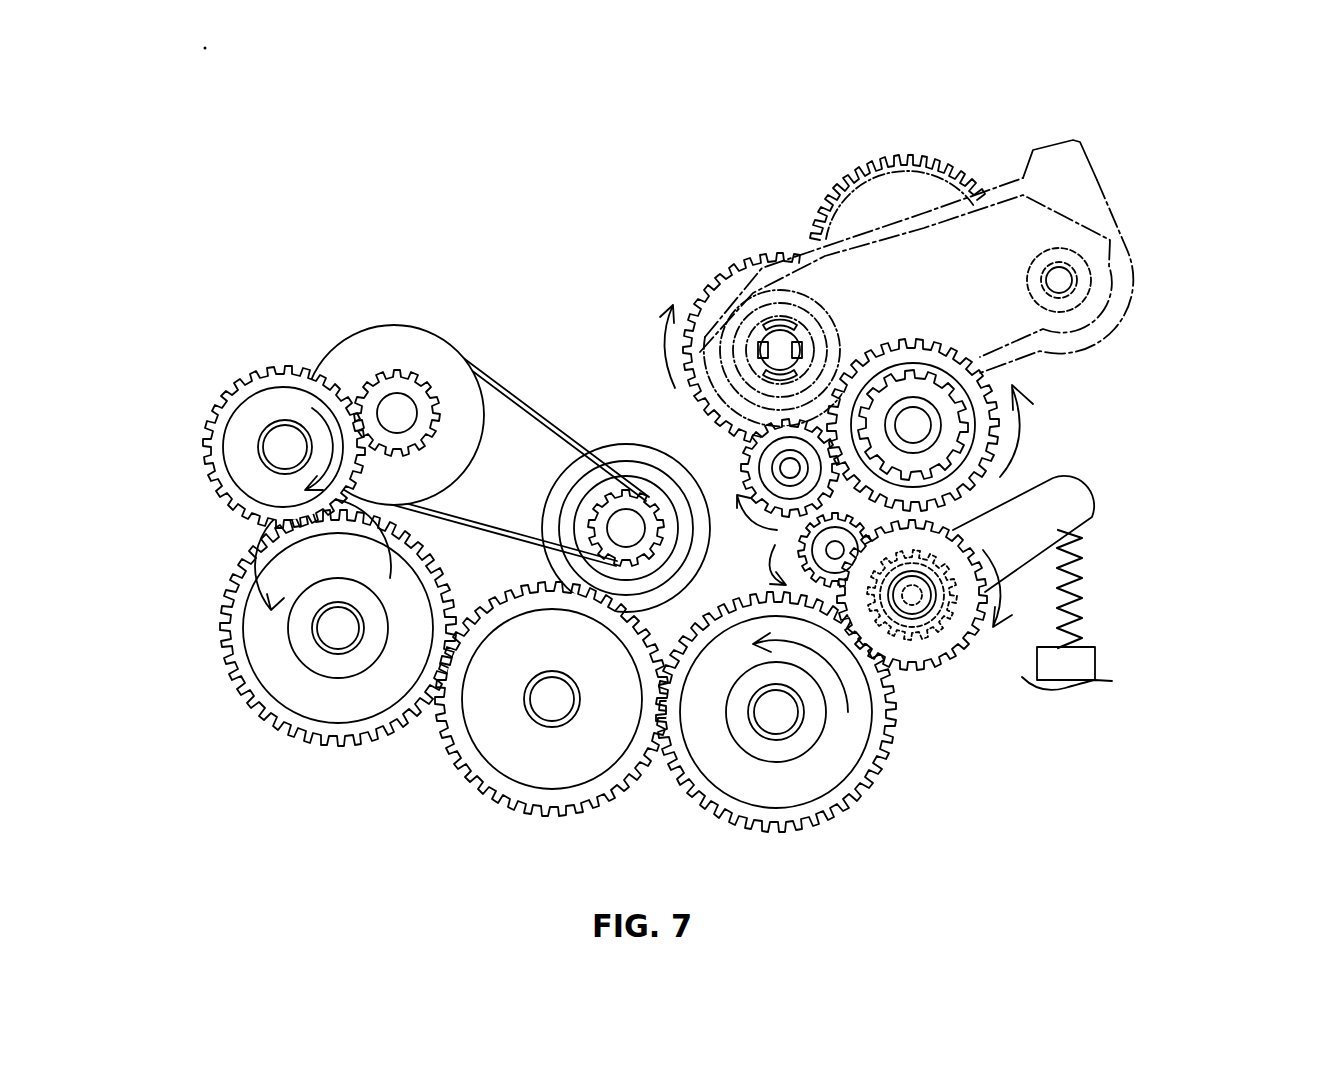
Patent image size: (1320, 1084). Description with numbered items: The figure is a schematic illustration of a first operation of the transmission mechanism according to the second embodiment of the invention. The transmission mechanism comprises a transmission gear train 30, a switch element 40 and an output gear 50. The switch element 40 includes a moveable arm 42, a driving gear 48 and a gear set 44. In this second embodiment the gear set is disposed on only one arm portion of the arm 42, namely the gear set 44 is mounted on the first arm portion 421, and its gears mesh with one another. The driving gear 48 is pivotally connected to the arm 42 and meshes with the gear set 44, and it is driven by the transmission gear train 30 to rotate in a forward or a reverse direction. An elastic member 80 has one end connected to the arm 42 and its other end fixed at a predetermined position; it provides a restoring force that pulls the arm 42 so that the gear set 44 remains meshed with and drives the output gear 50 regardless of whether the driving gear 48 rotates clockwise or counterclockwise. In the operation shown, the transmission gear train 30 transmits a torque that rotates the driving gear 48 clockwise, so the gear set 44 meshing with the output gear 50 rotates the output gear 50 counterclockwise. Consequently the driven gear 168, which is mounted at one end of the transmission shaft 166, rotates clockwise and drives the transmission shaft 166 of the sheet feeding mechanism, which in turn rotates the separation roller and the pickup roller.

The transmission gear train 30 is at (253, 707).
The switch element 40 is at (1103, 487).
The arm 42 is at (1034, 478).
The first arm portion 421 is at (898, 450).
The first gear set 44 is at (740, 474).
The driving gear 48 is at (943, 648).
The output gear 50 is at (990, 380).
The elastic member 80 is at (1073, 605).
The transmission shaft 166 is at (782, 353).
The driven gear 168 is at (747, 270).